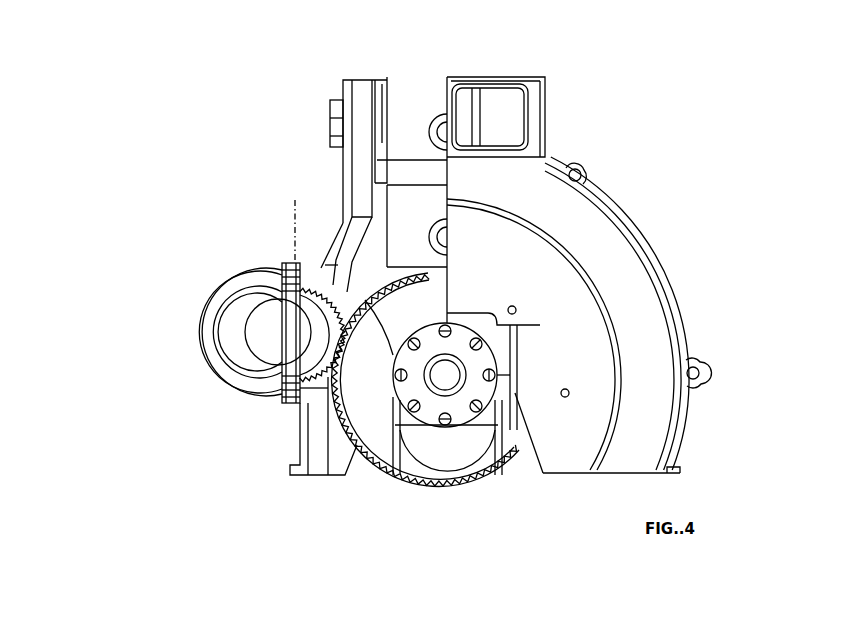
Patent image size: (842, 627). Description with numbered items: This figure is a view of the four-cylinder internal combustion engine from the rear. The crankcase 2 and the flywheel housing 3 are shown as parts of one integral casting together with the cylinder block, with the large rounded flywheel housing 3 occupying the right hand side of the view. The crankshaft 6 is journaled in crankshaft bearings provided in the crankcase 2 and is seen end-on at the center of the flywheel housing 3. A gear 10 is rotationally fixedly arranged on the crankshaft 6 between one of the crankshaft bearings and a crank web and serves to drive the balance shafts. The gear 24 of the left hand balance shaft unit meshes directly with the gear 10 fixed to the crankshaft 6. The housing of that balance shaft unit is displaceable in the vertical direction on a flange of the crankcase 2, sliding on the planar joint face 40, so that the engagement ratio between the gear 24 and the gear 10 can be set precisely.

The crankcase 2 is at (338, 241).
The flywheel housing 3 is at (612, 211).
The crankshaft 6 is at (443, 376).
The gear 10 is at (342, 375).
The gear 24 is at (322, 313).
The joint face 40 is at (290, 208).